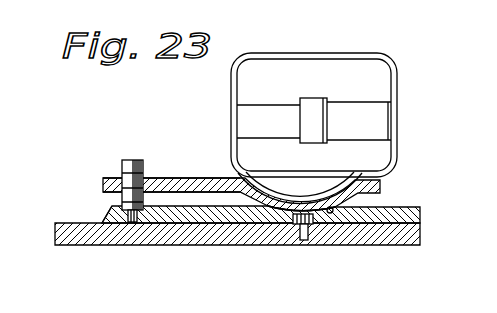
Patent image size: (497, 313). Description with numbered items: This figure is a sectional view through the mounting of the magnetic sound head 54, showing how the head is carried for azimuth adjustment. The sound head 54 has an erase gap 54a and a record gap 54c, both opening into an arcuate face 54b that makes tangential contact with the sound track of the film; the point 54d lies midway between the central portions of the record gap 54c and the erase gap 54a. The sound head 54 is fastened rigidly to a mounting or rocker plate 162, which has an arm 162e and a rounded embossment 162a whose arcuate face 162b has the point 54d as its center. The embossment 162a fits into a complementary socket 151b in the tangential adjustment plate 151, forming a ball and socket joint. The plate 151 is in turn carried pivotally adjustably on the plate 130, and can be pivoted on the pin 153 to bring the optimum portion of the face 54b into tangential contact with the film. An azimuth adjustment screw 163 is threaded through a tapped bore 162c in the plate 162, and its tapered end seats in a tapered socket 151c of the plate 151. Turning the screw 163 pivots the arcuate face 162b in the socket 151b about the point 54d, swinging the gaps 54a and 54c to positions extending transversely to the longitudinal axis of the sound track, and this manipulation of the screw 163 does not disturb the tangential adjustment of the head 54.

The magnetic sound head 54 is at (377, 72).
The erase gap 54a is at (327, 118).
The arcuate face 54b is at (370, 123).
The record gap 54c is at (296, 112).
The point 54d is at (315, 113).
The plate 130 is at (403, 246).
The tangential adjustment plate 151 is at (405, 210).
The socket 151b is at (333, 214).
The tapered socket 151c is at (112, 206).
The pin 153 is at (302, 243).
The mounting or rocker plate 162 is at (380, 183).
The rounded embossment 162a is at (247, 176).
The arcuate face 162b is at (270, 208).
The tapped bore 162c is at (127, 182).
The arm 162e is at (163, 177).
The azimuth adjustment screw 163 is at (137, 160).